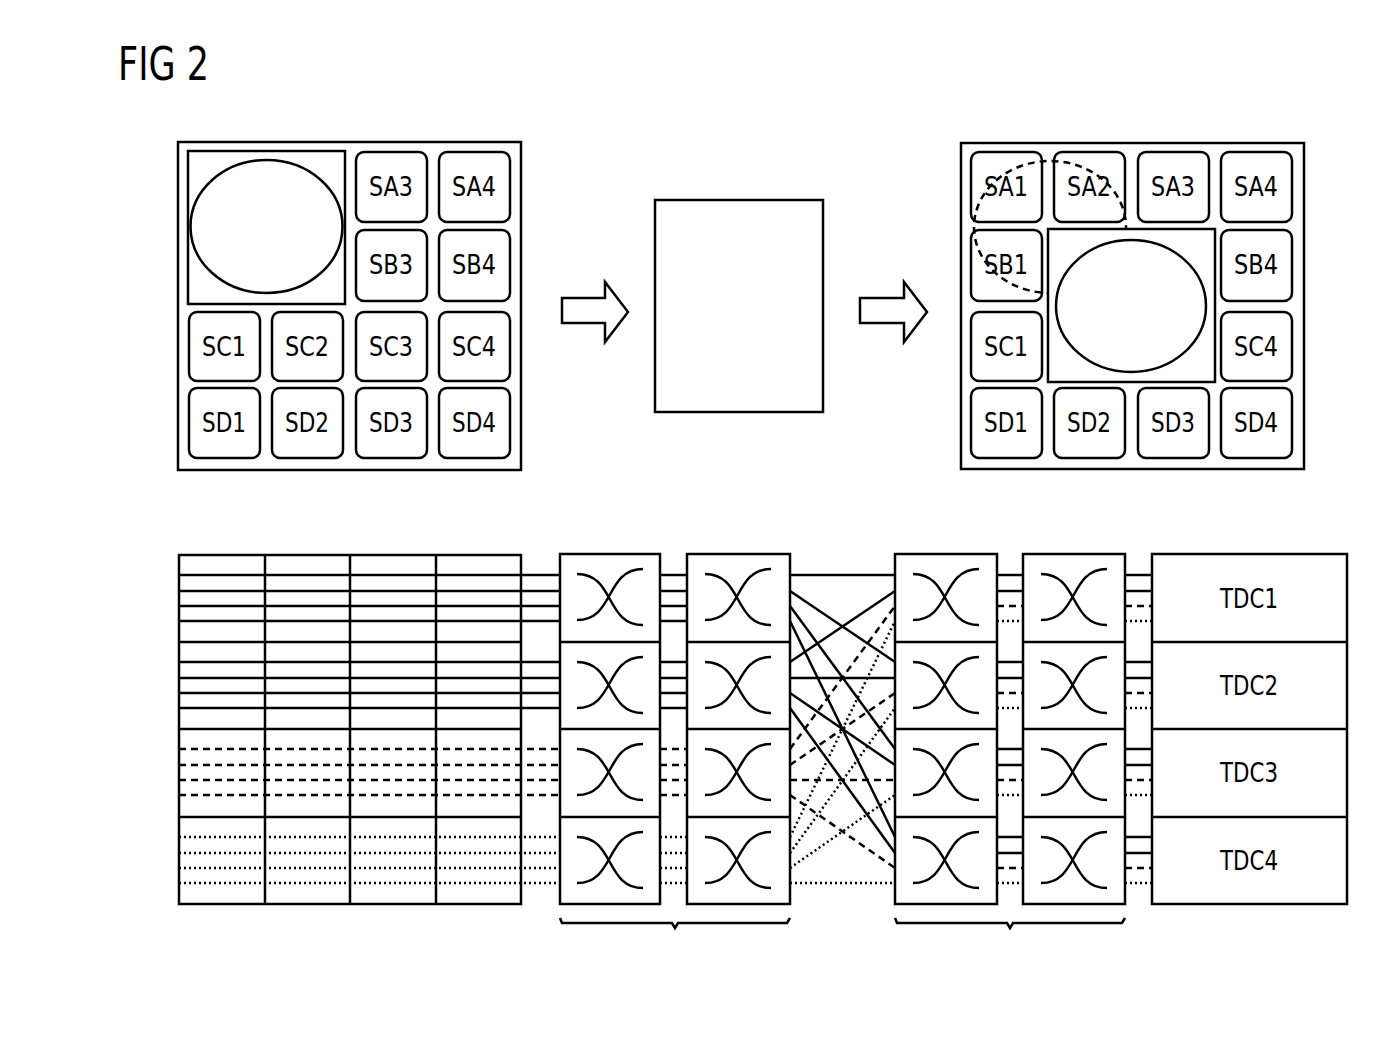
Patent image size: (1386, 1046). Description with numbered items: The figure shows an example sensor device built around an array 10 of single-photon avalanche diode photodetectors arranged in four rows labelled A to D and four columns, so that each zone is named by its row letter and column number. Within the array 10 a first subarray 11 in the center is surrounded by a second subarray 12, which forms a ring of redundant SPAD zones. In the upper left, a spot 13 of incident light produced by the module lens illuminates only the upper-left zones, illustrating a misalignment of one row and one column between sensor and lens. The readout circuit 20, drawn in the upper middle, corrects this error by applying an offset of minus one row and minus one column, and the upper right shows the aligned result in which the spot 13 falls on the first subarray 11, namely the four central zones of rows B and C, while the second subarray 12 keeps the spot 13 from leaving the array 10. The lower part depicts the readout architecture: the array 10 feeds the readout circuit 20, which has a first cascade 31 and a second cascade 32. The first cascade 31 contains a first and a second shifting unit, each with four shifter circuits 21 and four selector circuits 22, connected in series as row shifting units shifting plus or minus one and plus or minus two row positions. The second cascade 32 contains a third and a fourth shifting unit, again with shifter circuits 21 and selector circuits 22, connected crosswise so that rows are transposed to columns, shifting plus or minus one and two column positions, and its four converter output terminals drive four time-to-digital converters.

The array 10 is at (447, 142).
The first subarray 11 is at (188, 232).
The second subarray 12 is at (180, 380).
The spot 13 is at (265, 161).
The readout circuit 20 is at (737, 200).
The shifter circuits 21 is at (590, 553).
The selector circuits 22 is at (735, 553).
The first cascade 31 is at (675, 942).
The second cascade 32 is at (971, 770).